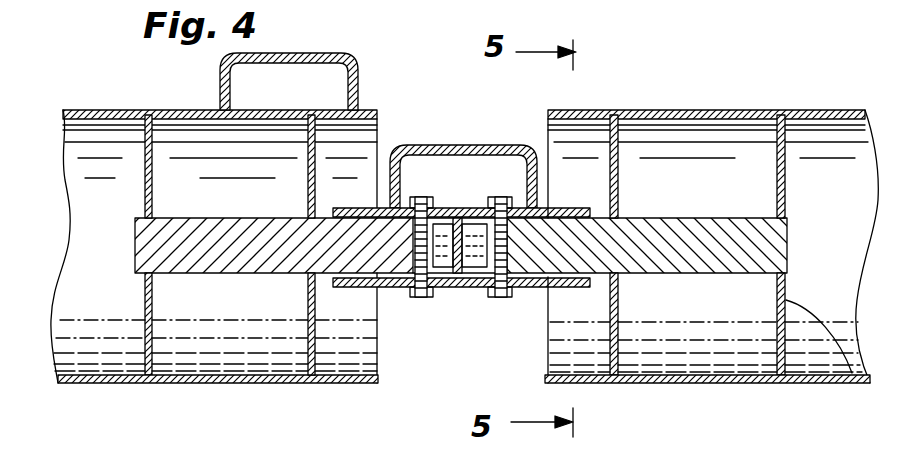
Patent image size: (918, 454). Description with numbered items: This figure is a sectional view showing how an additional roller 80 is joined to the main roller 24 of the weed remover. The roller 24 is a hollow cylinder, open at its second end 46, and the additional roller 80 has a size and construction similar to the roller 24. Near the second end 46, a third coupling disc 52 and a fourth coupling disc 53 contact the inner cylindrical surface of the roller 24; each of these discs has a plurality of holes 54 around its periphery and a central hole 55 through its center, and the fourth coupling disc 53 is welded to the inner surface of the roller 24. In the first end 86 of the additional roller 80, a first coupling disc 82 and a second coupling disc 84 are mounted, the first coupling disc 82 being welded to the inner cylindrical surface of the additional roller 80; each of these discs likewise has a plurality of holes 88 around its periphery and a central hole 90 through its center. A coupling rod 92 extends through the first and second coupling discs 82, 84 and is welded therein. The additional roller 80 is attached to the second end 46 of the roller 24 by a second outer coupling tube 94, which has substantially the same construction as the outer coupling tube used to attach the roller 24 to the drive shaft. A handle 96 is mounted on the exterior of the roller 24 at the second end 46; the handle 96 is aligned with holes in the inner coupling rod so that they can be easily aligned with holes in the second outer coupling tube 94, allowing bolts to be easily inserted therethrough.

The roller 24 is at (96, 105).
The second end 46 is at (355, 135).
The third coupling disc 52 is at (145, 290).
The fourth coupling disc 53 is at (305, 300).
The holes 54 is at (145, 343).
The central hole 55 is at (141, 218).
The additional roller 80 is at (806, 107).
The first coupling disc 82 is at (634, 315).
The second coupling disc 84 is at (855, 384).
The first end 86 is at (572, 328).
The holes 88 is at (621, 343).
The central hole 90 is at (620, 278).
The coupling rod 92 is at (722, 220).
The second outer coupling tube 94 is at (379, 290).
The handle 96 is at (310, 54).